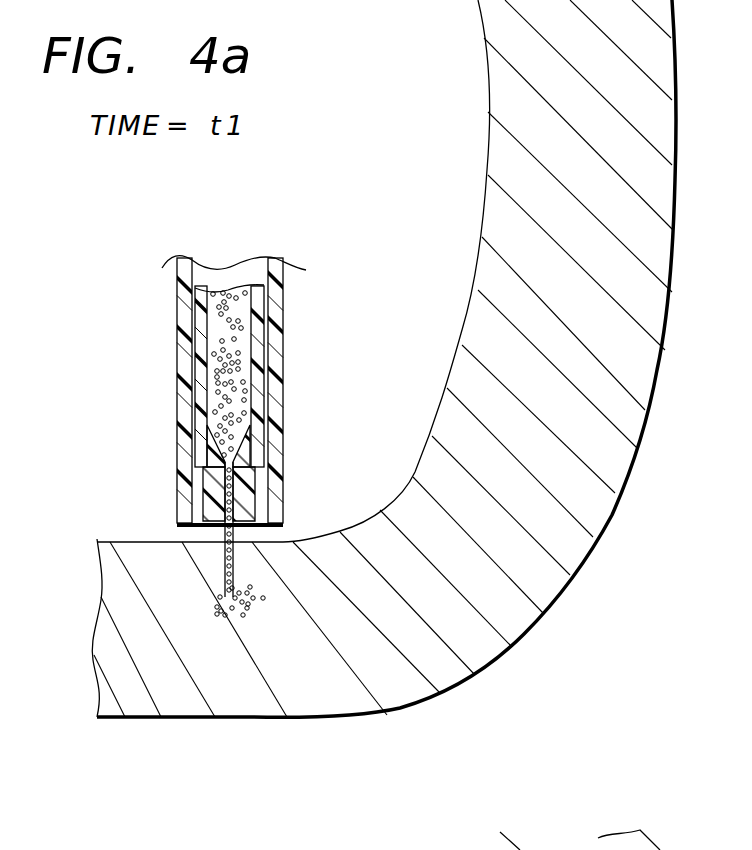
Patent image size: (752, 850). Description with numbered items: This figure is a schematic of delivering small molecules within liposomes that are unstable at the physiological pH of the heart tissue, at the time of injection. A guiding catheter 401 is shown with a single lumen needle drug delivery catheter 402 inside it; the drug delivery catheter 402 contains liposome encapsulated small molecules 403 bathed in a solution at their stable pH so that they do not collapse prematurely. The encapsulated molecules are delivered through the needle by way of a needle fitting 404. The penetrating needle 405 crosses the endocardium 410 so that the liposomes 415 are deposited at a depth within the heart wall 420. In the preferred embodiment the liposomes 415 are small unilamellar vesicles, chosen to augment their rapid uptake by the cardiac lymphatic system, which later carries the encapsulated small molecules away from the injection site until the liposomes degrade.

The guiding catheter 401 is at (281, 263).
The single lumen needle drug delivery catheter 402 is at (262, 338).
The liposome encapsulated small molecules 403 is at (232, 394).
The needle fitting 404 is at (237, 482).
The penetrating needle 405 is at (233, 568).
The endocardium 410 is at (152, 543).
The liposomes 415 is at (257, 603).
The heart wall 420 is at (247, 640).